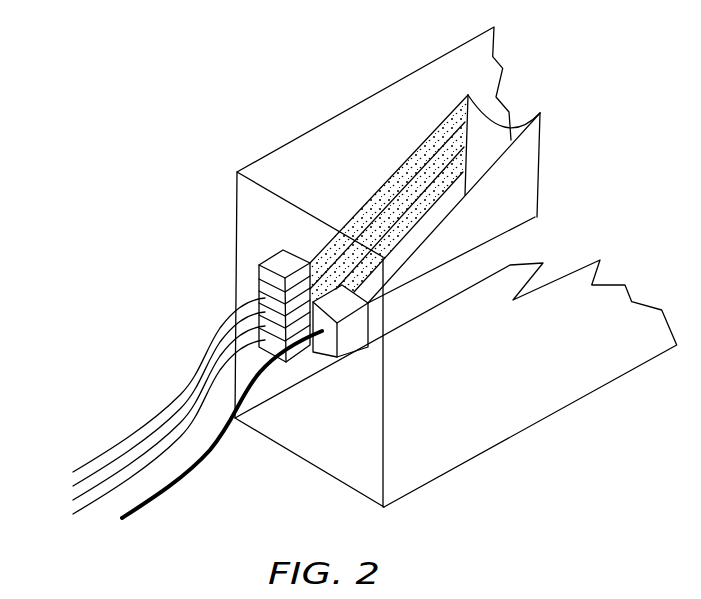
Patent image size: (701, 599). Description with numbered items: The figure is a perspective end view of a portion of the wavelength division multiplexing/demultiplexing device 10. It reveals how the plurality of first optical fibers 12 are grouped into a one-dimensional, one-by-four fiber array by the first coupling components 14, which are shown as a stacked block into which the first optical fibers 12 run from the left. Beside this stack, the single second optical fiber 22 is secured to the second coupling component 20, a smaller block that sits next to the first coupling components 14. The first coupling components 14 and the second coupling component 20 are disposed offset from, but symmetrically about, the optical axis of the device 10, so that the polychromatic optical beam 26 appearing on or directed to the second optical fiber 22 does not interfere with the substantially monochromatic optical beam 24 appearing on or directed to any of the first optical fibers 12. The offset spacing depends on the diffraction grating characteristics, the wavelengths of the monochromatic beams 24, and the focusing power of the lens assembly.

The wavelength division multiplexing/demultiplexing device 10 is at (241, 71).
The first optical fibers 12 is at (212, 363).
The first coupling components 14 is at (258, 268).
The second coupling component 20 is at (350, 337).
The second optical fiber 22 is at (193, 478).
The substantially monochromatic optical beam 24 is at (433, 130).
The polychromatic optical beam 26 is at (438, 248).